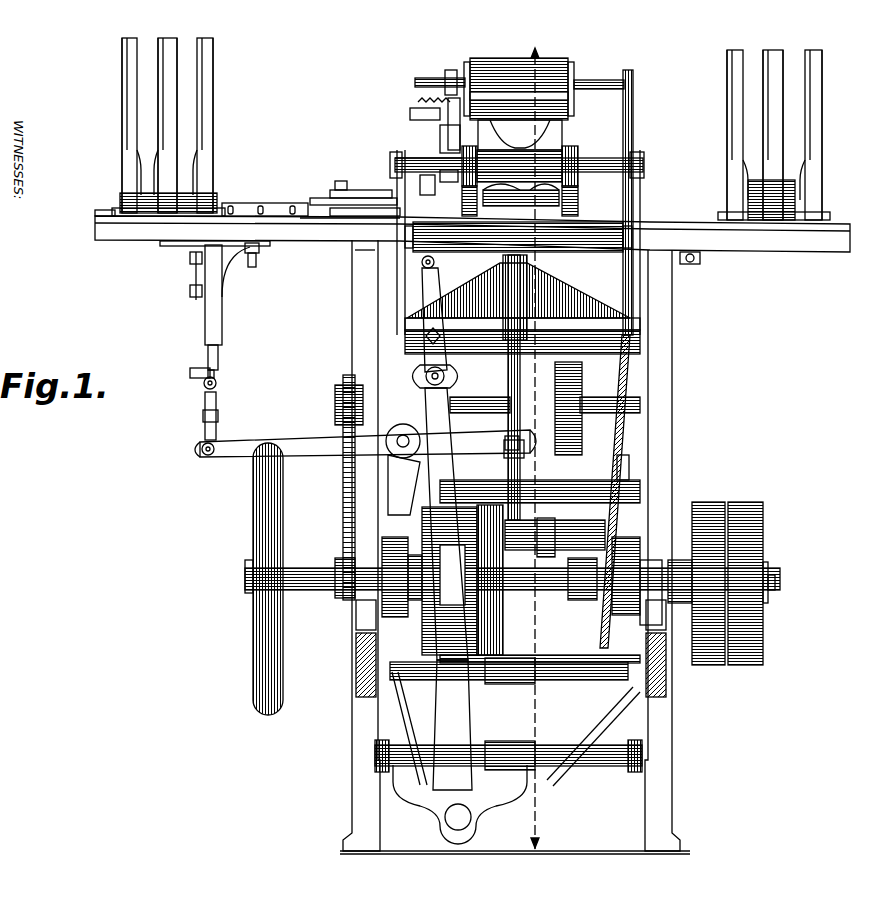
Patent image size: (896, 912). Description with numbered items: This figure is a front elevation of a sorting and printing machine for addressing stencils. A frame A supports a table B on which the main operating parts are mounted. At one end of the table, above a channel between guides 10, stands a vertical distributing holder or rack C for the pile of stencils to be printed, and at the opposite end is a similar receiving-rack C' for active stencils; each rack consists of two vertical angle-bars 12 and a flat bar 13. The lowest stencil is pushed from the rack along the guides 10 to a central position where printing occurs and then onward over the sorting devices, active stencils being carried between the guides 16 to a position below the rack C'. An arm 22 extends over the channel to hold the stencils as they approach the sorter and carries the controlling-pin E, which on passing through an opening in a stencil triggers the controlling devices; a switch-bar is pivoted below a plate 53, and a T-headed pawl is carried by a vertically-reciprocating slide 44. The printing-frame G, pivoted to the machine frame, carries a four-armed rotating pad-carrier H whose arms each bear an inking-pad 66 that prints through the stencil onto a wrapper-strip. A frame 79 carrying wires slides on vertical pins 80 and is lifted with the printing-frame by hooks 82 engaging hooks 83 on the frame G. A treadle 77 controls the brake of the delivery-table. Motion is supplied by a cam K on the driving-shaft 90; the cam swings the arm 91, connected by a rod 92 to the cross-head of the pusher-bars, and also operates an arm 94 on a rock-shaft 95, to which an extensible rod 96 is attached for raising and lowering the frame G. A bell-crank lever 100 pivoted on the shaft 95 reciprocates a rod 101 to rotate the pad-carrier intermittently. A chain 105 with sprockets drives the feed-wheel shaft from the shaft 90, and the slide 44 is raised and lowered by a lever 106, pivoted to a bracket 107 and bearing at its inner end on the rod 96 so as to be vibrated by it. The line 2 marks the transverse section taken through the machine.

The section line 2 2 is at (533, 449).
The guides 10 is at (338, 218).
The vertical angle-bars 12 is at (122, 98).
The flat bar 13 is at (170, 79).
The guides 16 is at (265, 206).
The arm 22 is at (356, 192).
The vertically-reciprocating slide 44 is at (216, 372).
The plate 53 is at (205, 263).
The inking-pad 66 is at (556, 112).
The treadle 77 is at (562, 386).
The frame 79 is at (518, 237).
The vertical pins 80 is at (439, 194).
The hooks 82 is at (580, 205).
The hooks 83 is at (578, 190).
The driving-shaft 90 is at (528, 660).
The arm 91 is at (516, 616).
The rod 92 is at (682, 264).
The arm 94 is at (556, 527).
The rock-shaft 95 is at (624, 532).
The extensible rod 96 is at (522, 456).
The bell-crank lever 100 is at (412, 380).
The rod 101 is at (432, 160).
The chain 105 is at (343, 537).
The lever 106 is at (265, 440).
The bracket 107 is at (392, 470).
The frame A is at (672, 408).
The table B is at (97, 230).
The distributing holder or rack C is at (784, 135).
The receiving-rack C' is at (157, 127).
The controlling-pin E is at (342, 214).
The printing-frame G is at (562, 212).
The pad-carrier H is at (486, 124).
The cam K is at (462, 580).